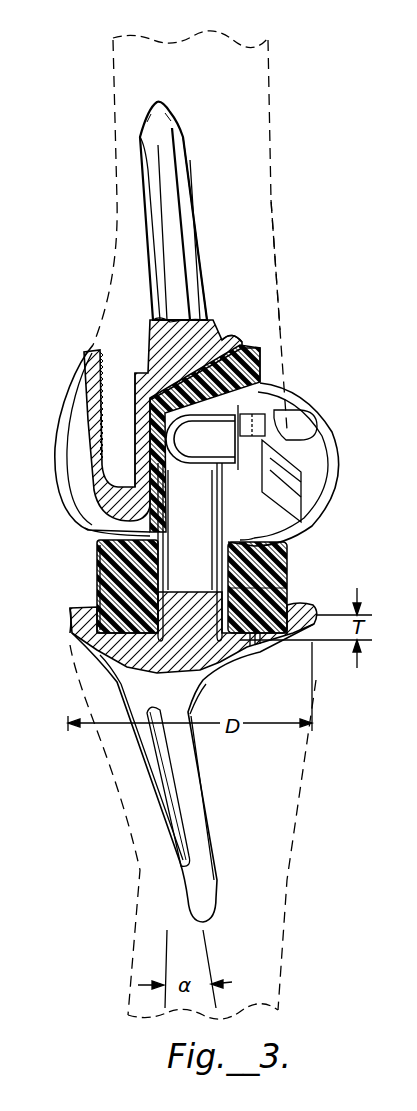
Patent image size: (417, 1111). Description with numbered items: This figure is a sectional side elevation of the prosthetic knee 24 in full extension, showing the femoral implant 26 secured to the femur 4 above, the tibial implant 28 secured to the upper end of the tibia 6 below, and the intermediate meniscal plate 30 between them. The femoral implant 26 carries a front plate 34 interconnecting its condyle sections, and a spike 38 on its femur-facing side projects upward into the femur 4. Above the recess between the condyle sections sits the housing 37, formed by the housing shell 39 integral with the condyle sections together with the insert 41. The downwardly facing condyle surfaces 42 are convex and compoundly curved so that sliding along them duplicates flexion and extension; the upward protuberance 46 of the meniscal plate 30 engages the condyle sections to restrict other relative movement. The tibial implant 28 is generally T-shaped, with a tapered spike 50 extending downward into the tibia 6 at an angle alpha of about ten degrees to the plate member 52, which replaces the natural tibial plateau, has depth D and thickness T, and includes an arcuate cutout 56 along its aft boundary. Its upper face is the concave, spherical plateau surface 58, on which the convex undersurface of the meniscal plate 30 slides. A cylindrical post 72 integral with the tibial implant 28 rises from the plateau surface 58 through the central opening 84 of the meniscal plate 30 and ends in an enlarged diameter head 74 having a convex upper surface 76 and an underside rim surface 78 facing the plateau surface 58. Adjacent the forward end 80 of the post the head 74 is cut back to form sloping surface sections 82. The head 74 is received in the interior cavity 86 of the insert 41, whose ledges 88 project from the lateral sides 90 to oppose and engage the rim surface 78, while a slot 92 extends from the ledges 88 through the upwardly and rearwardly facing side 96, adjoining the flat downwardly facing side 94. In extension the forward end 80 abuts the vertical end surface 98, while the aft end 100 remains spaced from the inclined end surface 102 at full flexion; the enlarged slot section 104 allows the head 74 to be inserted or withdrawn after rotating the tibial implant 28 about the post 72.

The femur 4 is at (272, 63).
The tibia 6 is at (283, 955).
The prosthetic knee 24 is at (262, 231).
The femoral implant 26 is at (76, 381).
The tibial implant 28 is at (235, 668).
The meniscal plate 30 is at (298, 567).
The front plate 34 is at (90, 405).
The housing 37 is at (128, 430).
The spike 38 is at (190, 180).
The housing shell 39 is at (137, 375).
The insert 41 is at (246, 343).
The condyle surfaces 42 is at (66, 486).
The protuberance 46 is at (277, 535).
The tapered spike 50 is at (207, 856).
The plate member 52 is at (85, 627).
The arcuate cutout 56 is at (262, 640).
The plateau surface 58 is at (80, 608).
The cylindrical post 72 is at (128, 558).
The enlarged diameter head 74 is at (265, 418).
The upper surface 76 is at (212, 452).
The rim surface 78 is at (290, 458).
The forward end 80 is at (98, 531).
The sloping surface sections 82 is at (172, 462).
The opening 84 is at (96, 600).
The interior cavity 86 is at (258, 392).
The ledges 88 is at (292, 447).
The lateral sides 90 is at (283, 400).
The slot 92 is at (290, 432).
The downwardly facing side 94 is at (282, 510).
The upwardly and rearwardly facing side 96 is at (252, 368).
The end surface 98 is at (170, 495).
The aft end 100 is at (270, 590).
The end surface 102 is at (228, 342).
The enlarged slot section 104 is at (278, 490).